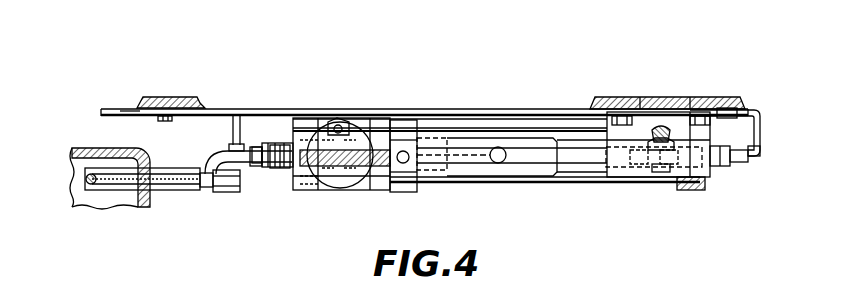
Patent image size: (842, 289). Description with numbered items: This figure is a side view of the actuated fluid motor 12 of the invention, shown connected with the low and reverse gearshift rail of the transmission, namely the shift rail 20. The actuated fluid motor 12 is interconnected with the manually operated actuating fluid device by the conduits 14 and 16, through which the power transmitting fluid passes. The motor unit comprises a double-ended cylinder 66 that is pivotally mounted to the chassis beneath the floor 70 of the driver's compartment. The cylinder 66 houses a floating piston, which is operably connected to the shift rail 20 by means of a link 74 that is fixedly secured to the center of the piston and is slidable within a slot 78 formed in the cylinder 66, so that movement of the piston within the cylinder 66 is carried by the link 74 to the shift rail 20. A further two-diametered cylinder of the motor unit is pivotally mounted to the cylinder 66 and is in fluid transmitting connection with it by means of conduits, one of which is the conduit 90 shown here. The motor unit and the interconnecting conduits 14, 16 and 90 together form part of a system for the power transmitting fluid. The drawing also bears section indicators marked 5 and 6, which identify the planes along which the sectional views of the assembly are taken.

The actuated fluid motor 12 is at (468, 104).
The conduit 14 is at (547, 112).
The conduit 16 is at (233, 128).
The shift rail 20 is at (172, 183).
The double-ended cylinder 66 is at (538, 179).
The floor 70 is at (663, 97).
The link 74 is at (467, 160).
The slot 78 is at (518, 160).
The conduit 90 is at (767, 147).
The section line 5- 5 is at (37, 145).
The section line 6- 6 is at (328, 93).